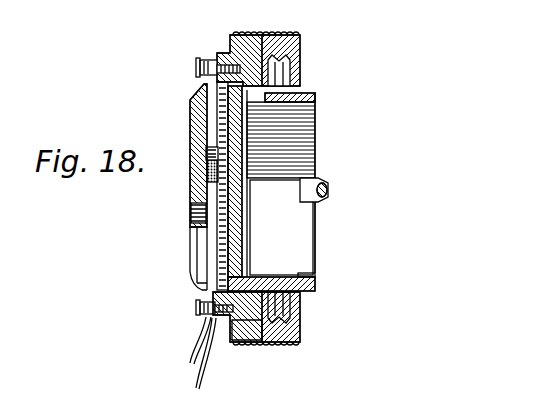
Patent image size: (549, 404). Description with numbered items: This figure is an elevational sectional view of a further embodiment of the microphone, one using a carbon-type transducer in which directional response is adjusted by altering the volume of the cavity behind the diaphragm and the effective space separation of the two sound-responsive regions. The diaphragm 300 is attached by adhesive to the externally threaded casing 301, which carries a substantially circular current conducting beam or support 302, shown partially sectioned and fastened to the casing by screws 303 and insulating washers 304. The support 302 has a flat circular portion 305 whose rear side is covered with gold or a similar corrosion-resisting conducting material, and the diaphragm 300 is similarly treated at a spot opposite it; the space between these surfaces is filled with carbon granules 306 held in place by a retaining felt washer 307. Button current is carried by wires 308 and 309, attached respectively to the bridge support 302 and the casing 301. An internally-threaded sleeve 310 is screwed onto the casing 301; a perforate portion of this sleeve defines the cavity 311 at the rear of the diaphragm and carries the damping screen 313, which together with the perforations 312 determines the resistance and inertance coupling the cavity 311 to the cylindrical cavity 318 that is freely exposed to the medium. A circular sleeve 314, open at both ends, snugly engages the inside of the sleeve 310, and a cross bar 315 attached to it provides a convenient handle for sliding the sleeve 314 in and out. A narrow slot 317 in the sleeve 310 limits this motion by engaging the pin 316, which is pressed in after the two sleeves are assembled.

The diaphragm 300 is at (198, 230).
The externally threaded casing 301 is at (246, 342).
The current conducting beam or support 302 is at (197, 248).
The screws 303 is at (196, 68).
The insulating washers 304 is at (204, 60).
The flat circular portion 305 is at (207, 205).
The carbon granules 306 is at (207, 170).
The retaining felt washer 307 is at (192, 117).
The wire 308 is at (198, 345).
The wire 309 is at (200, 368).
The internally-threaded sleeve 310 is at (300, 332).
The cavity 311 is at (316, 166).
The perforations 312 is at (247, 218).
The damping screen 313 is at (316, 143).
The circular sleeve 314 is at (320, 289).
The cross bar 315 is at (330, 190).
The pin 316 is at (315, 96).
The narrow slot 317 is at (300, 82).
The cylindrical cavity 318 is at (287, 217).